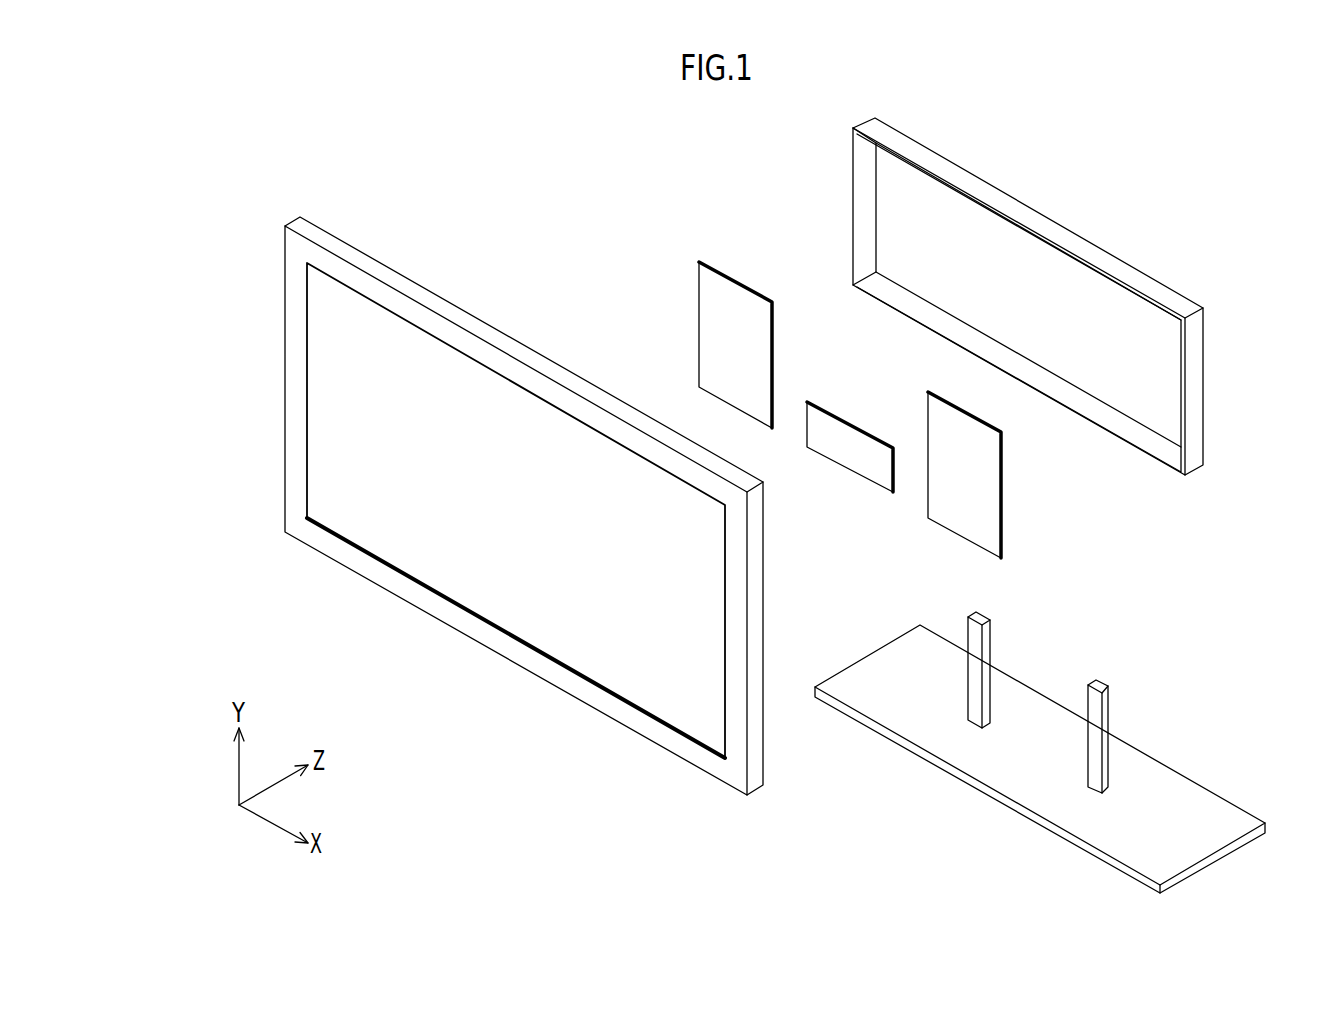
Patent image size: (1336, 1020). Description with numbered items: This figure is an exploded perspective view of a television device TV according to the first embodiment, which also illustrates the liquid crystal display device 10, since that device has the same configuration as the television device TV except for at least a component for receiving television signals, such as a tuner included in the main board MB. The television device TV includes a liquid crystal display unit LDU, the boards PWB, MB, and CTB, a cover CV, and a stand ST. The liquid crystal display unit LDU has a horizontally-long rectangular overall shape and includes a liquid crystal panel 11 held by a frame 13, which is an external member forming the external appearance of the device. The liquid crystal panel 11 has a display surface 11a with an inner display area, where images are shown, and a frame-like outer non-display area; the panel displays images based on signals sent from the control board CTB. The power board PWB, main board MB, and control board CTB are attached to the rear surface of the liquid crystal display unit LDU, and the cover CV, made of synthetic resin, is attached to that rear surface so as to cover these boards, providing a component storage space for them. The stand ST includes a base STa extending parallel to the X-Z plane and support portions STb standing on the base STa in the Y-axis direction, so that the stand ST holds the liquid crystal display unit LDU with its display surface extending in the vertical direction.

The television device TV is at (387, 128).
The liquid crystal display device 10 is at (540, 208).
The liquid crystal display unit LDU is at (285, 343).
The frame 13 is at (298, 250).
The liquid crystal panel 11 is at (487, 597).
The display surface 11a is at (405, 540).
The main board MB is at (733, 277).
The control board CTB is at (852, 423).
The power board PWB is at (1003, 485).
The cover CV is at (1028, 203).
The stand ST is at (913, 753).
The base STa is at (1017, 772).
The support portions STb is at (1087, 698).